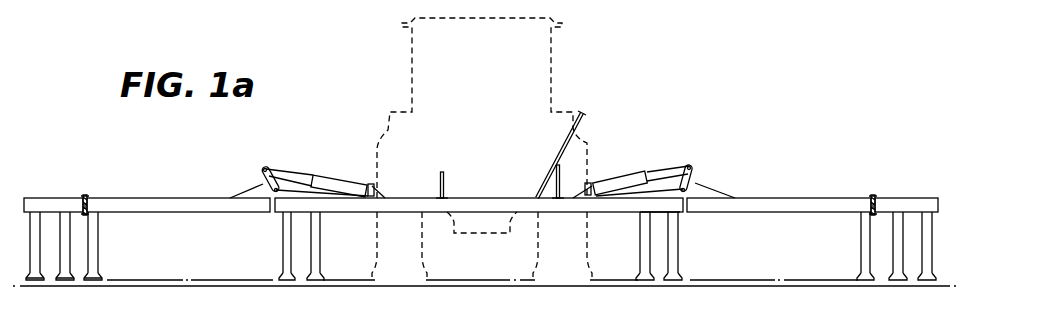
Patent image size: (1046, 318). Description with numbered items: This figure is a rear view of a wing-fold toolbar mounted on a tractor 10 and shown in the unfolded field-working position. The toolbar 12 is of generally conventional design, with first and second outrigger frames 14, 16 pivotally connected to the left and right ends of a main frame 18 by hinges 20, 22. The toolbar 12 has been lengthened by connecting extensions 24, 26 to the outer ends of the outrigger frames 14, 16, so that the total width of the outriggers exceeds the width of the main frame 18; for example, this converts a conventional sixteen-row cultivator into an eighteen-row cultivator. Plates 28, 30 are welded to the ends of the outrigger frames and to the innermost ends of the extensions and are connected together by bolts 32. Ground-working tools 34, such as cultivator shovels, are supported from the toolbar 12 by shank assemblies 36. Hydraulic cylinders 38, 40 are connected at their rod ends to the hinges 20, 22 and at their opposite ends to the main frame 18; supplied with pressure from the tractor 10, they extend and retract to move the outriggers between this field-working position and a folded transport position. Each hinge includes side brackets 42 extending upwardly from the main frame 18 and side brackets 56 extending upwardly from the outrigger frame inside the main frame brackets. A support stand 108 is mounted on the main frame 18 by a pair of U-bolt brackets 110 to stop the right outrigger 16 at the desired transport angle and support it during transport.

The tractor 10 is at (552, 53).
The toolbar 12 is at (790, 117).
The first outrigger frame 14 is at (182, 197).
The second outrigger frame 16 is at (781, 197).
The main frame 18 is at (485, 197).
The hinge 20 is at (307, 164).
The hinge 22 is at (666, 162).
The extension 24 is at (57, 196).
The extension 26 is at (920, 198).
The plate 28 is at (88, 198).
The plate 30 is at (85, 197).
The bolt 32 is at (90, 213).
The ground-working tool 34 is at (88, 282).
The shank assembly 36 is at (70, 249).
The hydraulic cylinder 38 is at (331, 178).
The hydraulic cylinder 40 is at (620, 178).
The side bracket 42 is at (660, 198).
The side bracket 56 is at (715, 197).
The support stand 108 is at (564, 146).
The U-bolt bracket 110 is at (556, 212).